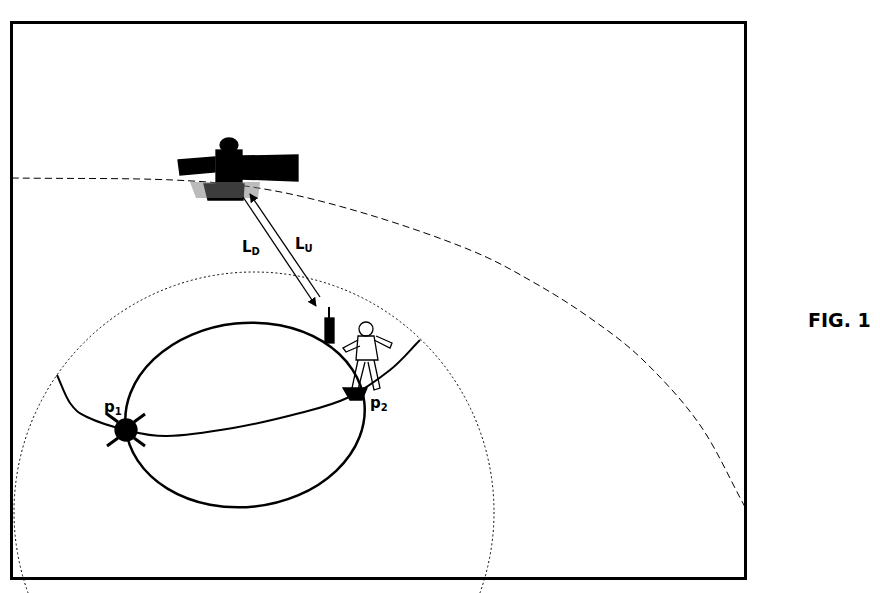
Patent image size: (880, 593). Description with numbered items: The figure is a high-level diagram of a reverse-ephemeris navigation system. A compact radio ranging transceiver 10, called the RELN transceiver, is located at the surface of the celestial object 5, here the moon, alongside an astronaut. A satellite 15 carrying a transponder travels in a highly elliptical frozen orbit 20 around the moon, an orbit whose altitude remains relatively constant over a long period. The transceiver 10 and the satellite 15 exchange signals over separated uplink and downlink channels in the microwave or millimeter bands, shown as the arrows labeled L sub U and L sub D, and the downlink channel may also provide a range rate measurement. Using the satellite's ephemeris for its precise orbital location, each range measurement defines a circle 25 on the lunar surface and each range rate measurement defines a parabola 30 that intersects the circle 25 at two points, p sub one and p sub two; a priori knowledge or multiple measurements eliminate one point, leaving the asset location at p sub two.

The celestial object 5 is at (500, 507).
The compact radio ranging transceiver 10 is at (336, 318).
The satellite 15 is at (297, 141).
The highly elliptical frozen orbit 20 is at (534, 281).
The circle 25 is at (361, 453).
The parabola 30 is at (67, 410).